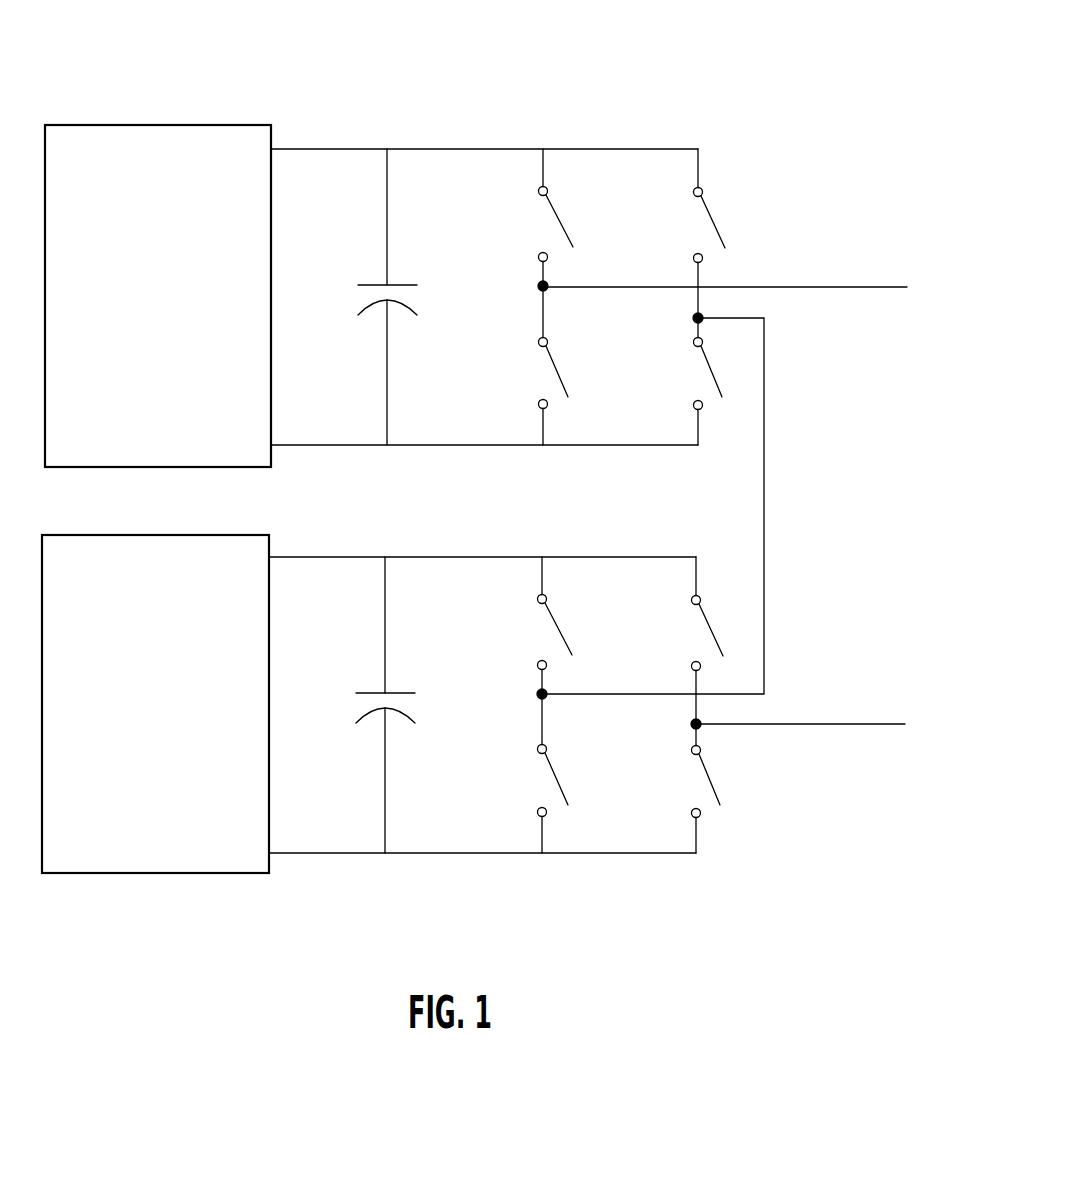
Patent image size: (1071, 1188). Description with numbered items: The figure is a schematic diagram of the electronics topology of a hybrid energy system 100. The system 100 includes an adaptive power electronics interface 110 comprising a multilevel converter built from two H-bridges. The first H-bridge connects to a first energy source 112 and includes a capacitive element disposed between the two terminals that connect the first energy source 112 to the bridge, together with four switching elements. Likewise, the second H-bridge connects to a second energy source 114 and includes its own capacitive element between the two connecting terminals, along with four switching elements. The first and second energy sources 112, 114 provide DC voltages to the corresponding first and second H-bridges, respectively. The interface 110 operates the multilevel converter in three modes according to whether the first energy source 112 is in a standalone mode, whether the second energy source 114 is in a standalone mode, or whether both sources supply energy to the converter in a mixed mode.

The hybrid energy system 100 is at (836, 66).
The adaptive power electronics interface 110 is at (713, 937).
The first energy source 112 is at (173, 774).
The second energy source 114 is at (175, 369).